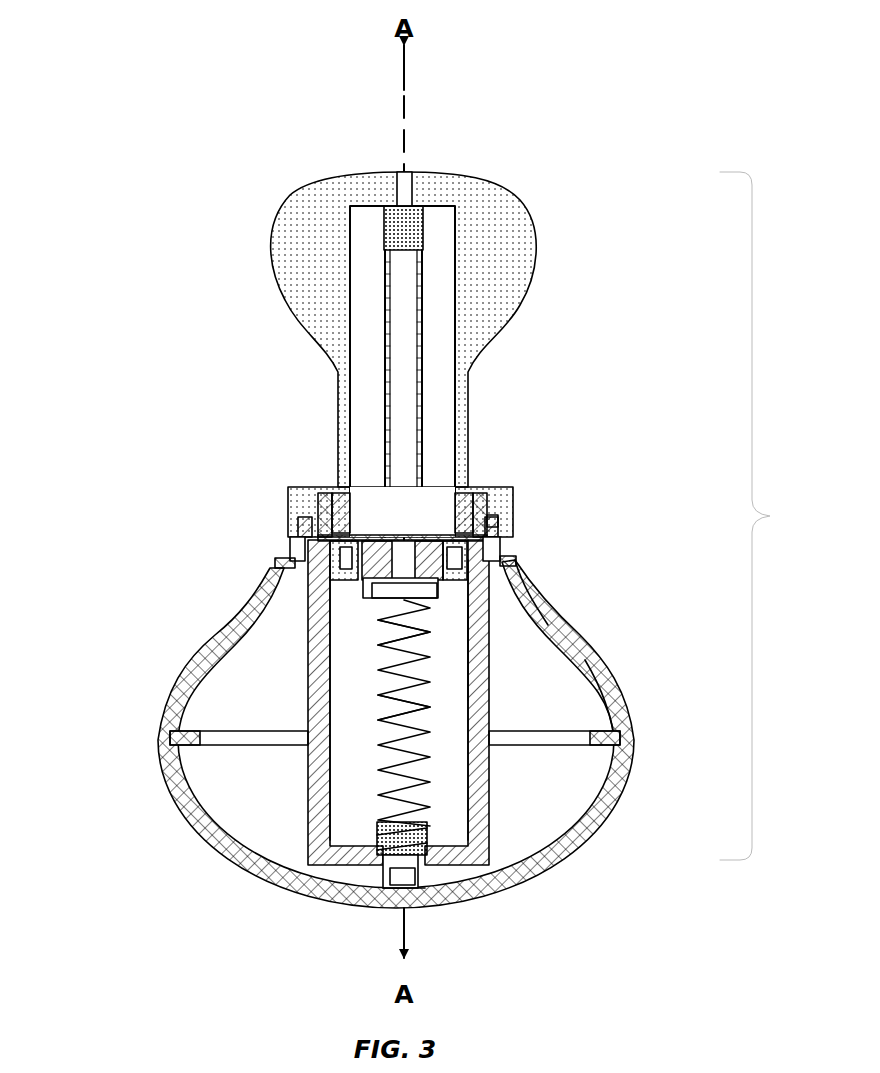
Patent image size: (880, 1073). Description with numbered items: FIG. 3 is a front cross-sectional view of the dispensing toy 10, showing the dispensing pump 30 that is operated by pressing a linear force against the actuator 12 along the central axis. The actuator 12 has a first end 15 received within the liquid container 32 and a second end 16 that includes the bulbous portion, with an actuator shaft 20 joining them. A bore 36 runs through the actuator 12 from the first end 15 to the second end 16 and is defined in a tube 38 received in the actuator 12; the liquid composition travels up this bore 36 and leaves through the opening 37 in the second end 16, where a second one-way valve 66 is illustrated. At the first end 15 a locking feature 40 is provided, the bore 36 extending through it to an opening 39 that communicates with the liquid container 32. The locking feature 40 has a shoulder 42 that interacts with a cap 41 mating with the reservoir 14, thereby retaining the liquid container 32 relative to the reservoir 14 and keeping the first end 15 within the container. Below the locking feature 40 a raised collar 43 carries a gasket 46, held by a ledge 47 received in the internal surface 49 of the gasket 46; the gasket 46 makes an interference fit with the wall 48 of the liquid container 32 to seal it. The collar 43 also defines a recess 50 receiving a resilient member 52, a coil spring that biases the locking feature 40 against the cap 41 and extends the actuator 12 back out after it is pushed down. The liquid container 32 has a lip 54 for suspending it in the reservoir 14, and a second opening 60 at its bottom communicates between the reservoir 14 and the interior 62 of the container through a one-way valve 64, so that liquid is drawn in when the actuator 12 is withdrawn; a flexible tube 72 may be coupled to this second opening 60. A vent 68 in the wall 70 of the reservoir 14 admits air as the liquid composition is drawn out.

The dispensing toy 10 is at (246, 120).
The actuator 12 is at (528, 222).
The reservoir 14 is at (162, 730).
The first end 15 is at (487, 502).
The second end 16 is at (454, 352).
The actuator shaft 20 is at (338, 372).
The dispensing pump 30 is at (785, 516).
The liquid container 32 is at (489, 793).
The bore 36 is at (405, 383).
The opening 37 is at (400, 178).
The tube 38 is at (418, 418).
The opening 39 is at (403, 562).
The locking feature 40 is at (500, 548).
The cap 41 is at (302, 487).
The shoulder 42 is at (320, 500).
The raised collar 43 is at (367, 582).
The gasket 46 is at (357, 568).
The ledge 47 is at (338, 563).
The wall 48 is at (476, 755).
The internal surface 49 is at (282, 565).
The recess 50 is at (370, 598).
The resilient member 52 is at (383, 692).
The lip 54 is at (500, 521).
The second opening 60 is at (440, 895).
The interior 62 is at (384, 713).
The one-way valve 64 is at (383, 857).
The second one-way valve 66 is at (423, 233).
The vent 68 is at (527, 597).
The wall 70 is at (607, 687).
The flexible tube 72 is at (395, 888).